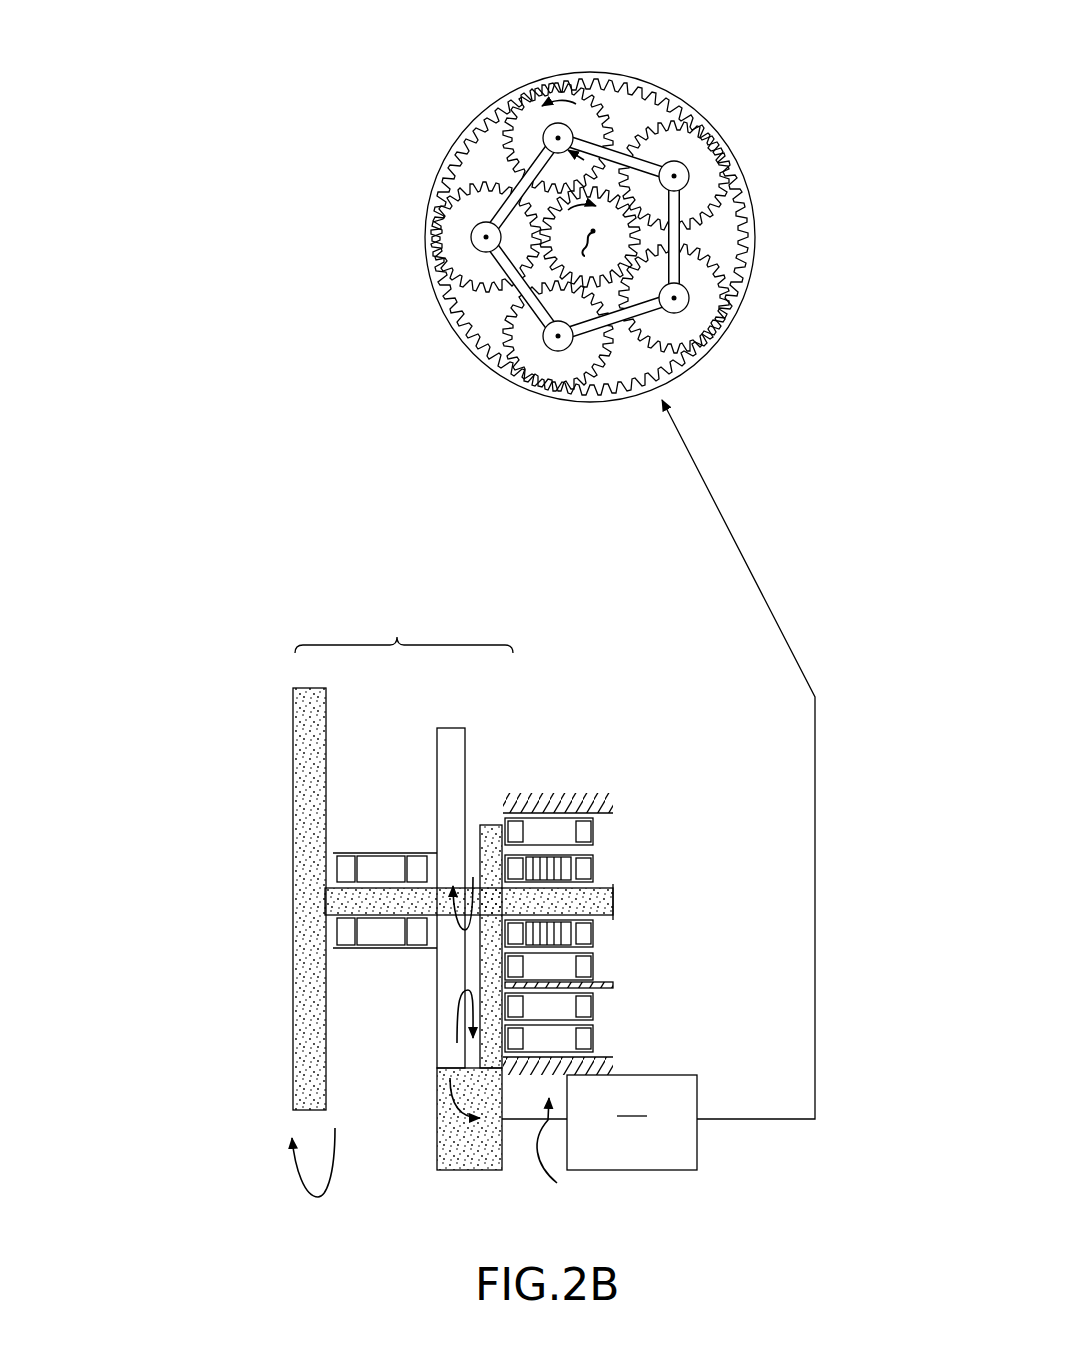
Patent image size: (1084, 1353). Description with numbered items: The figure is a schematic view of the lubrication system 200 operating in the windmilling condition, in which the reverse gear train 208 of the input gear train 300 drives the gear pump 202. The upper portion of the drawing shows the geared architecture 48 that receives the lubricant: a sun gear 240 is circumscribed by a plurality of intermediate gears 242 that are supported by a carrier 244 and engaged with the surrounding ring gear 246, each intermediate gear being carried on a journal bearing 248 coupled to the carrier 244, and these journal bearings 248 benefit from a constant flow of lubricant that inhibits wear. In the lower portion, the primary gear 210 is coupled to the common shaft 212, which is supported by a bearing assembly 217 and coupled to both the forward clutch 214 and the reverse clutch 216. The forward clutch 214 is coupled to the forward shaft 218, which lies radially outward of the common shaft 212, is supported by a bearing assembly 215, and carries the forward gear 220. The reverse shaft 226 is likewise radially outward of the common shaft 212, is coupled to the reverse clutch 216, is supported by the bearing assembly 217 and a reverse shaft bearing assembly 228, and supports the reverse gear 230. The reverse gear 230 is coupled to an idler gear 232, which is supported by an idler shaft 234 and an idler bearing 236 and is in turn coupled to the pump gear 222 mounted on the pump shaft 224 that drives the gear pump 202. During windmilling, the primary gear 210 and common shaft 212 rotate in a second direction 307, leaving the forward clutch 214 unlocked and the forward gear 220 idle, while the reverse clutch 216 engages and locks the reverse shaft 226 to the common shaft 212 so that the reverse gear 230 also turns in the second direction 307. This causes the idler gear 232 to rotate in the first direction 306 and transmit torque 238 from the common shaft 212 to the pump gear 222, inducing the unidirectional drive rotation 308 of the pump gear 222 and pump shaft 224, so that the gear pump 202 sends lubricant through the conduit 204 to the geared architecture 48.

The geared architecture 48 is at (712, 56).
The ring gear 246 is at (751, 189).
The sun gear 240 is at (642, 242).
The intermediate gears 242 is at (514, 139).
The carrier 244 is at (677, 202).
The journal bearing 248 is at (560, 138).
The lubrication system 200 is at (242, 532).
The input gear train 300 is at (404, 631).
The reverse gear train 208 is at (510, 750).
The primary gear 210 is at (304, 718).
The forward gear 220 is at (452, 740).
The reverse gear 230 is at (491, 824).
The common shaft 212 is at (615, 900).
The forward clutch 214 is at (363, 865).
The forward shaft 218 is at (382, 853).
The bearing assembly 215 is at (422, 865).
The reverse shaft bearing assembly 228 is at (587, 833).
The reverse shaft 226 is at (595, 850).
The reverse clutch 216 is at (568, 868).
The bearing assembly 217 is at (585, 935).
The idler bearing 236 is at (585, 1005).
The idler shaft 234 is at (598, 1025).
The second direction 307 is at (452, 928).
The idler gear 232 is at (462, 988).
The first direction 306 is at (457, 1030).
The torque 238 is at (442, 1100).
The pump gear 222 is at (440, 1160).
The pump shaft 224 is at (522, 1088).
The drive rotation 308 is at (566, 1150).
The gear pump 202 is at (632, 1122).
The conduit 204 is at (815, 805).